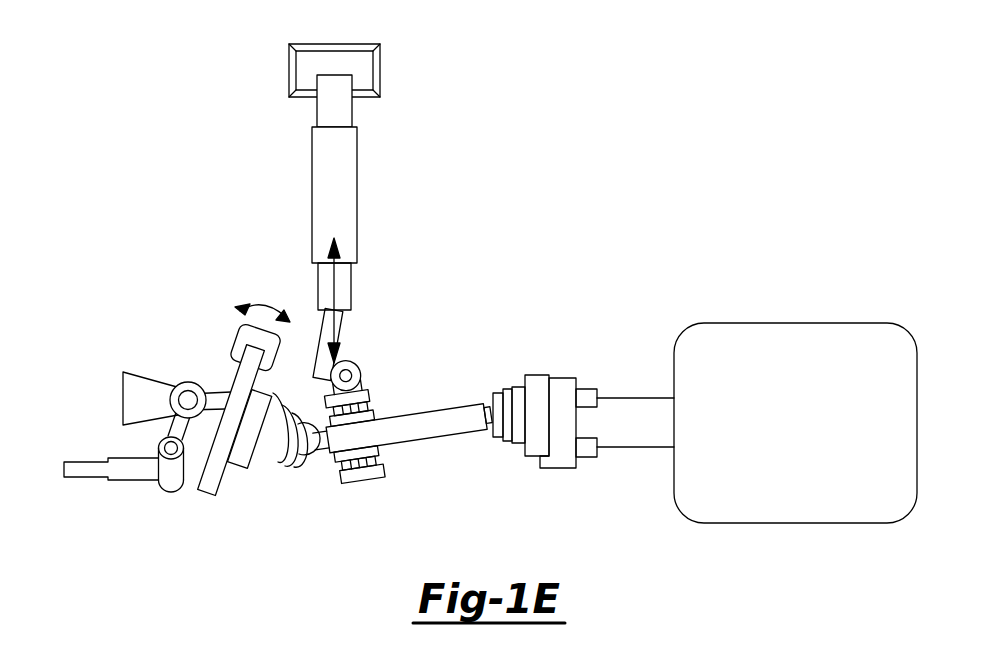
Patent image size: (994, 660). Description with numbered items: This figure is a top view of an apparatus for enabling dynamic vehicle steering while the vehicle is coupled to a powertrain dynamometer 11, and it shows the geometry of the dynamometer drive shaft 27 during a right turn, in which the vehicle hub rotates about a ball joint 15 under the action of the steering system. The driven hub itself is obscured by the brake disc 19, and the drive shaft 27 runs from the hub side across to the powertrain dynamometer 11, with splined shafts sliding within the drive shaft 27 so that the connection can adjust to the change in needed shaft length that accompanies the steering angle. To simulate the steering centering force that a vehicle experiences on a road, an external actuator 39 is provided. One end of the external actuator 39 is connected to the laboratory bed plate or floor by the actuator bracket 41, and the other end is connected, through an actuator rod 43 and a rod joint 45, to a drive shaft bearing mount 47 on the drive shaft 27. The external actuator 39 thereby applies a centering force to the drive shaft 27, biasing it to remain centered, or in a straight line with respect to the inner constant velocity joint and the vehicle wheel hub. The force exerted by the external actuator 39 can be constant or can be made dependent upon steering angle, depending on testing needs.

The powertrain dynamometer 11 is at (813, 350).
The ball joint 15 is at (188, 398).
The brake disc 19 is at (213, 478).
The drive shaft 27 is at (438, 422).
The external actuator 39 is at (340, 168).
The actuator bracket 41 is at (358, 70).
The actuator rod 43 is at (340, 335).
The rod joint 45 is at (348, 373).
The drive shaft bearing mount 47 is at (360, 473).